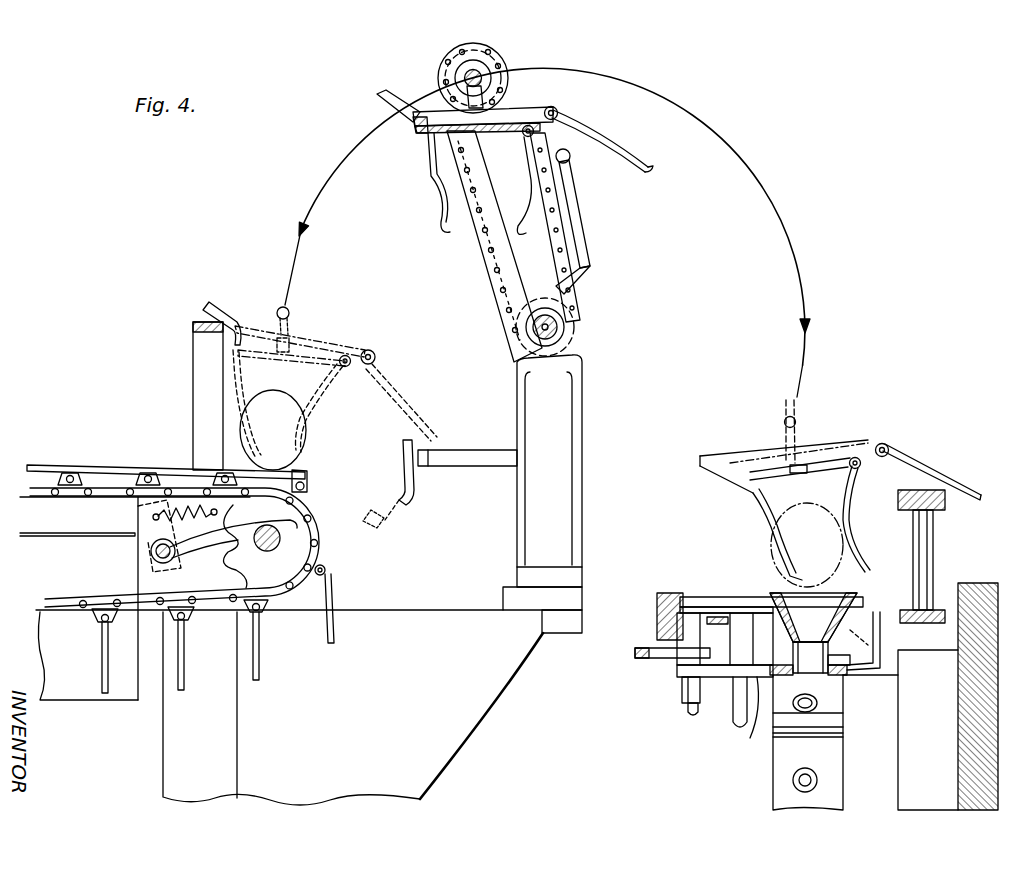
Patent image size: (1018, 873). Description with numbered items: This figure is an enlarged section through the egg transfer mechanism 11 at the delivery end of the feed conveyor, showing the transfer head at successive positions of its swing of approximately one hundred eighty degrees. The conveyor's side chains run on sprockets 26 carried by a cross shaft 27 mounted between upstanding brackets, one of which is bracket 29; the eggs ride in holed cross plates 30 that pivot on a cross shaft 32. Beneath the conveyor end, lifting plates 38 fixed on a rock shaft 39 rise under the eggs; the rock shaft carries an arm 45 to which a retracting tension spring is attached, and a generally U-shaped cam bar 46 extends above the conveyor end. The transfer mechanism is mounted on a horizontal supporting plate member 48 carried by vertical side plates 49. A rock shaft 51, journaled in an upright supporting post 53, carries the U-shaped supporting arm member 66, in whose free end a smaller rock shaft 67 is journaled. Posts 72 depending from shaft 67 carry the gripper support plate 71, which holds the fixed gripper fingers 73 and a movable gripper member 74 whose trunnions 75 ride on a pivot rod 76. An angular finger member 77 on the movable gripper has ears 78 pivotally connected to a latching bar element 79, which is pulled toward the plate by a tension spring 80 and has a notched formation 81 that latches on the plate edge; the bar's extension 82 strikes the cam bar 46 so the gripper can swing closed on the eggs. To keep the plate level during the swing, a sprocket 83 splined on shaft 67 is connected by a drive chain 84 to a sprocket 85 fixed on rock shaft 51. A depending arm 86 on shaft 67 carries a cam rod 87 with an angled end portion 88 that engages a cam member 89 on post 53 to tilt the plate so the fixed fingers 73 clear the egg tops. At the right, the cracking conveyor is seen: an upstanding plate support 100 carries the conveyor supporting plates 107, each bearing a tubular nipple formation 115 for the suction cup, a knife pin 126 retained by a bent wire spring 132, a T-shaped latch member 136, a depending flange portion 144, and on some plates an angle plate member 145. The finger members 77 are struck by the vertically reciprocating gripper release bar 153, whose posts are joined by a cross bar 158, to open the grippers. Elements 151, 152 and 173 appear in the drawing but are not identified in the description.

The transfer mechanism 11 is at (383, 117).
The sprockets 26 is at (283, 567).
The cross shaft 27 is at (284, 542).
The upstanding bracket 29 is at (138, 565).
The cross plates 30 is at (165, 470).
The cross shaft 32 is at (328, 570).
The lifting plate members 38 is at (258, 542).
The rock shaft 39 is at (168, 562).
The arm 45 is at (132, 542).
The cam bar 46 is at (192, 338).
The supporting plate member 48 is at (430, 614).
The side plates 49 is at (453, 712).
The rock shaft 51 is at (566, 306).
The upright supporting post 53 is at (582, 412).
The supporting arm member 66 is at (472, 238).
The smaller rock shaft 67 is at (450, 70).
The gripper support plate 71 is at (455, 129).
The posts 72 is at (482, 96).
The fixed gripper fingers 73 is at (436, 210).
The movable gripper member 74 is at (520, 236).
The trunnions 75 is at (560, 119).
The pivot rod 76 is at (566, 127).
The finger member 77 is at (647, 165).
The ears 78 is at (556, 110).
The latching bar element 79 is at (520, 118).
The tension spring 80 is at (521, 133).
The notched formation 81 is at (425, 120).
The latch bar extension 82 is at (380, 97).
The sprocket 83 is at (492, 68).
The drive chain 84 is at (572, 232).
The sprocket 85 is at (574, 327).
The depending arm 86 is at (572, 160).
The cam rod 87 is at (586, 212).
The angled end portion 88 is at (578, 275).
The cam member 89 is at (437, 467).
The upstanding plate support 100 is at (965, 683).
The supporting plates 107 is at (753, 725).
The tubular nipple formation 115 is at (828, 661).
The pin 126 is at (690, 716).
The bent wire spring 132 is at (682, 690).
The T-shaped latch member 136 is at (657, 598).
The depending flange portion 144 is at (792, 650).
The angle plate member 145 is at (877, 620).
The funnel cup 151 is at (830, 625).
The post 152 is at (922, 550).
The gripper release bar 153 is at (935, 490).
The cross bar 158 is at (938, 612).
The pin 173 is at (634, 653).